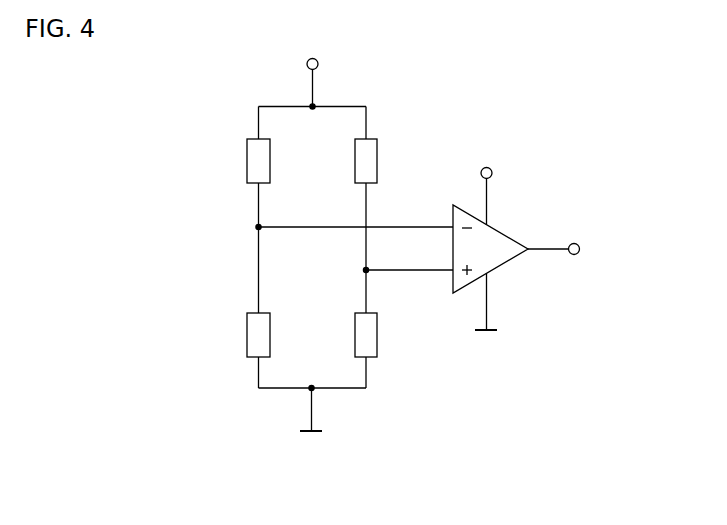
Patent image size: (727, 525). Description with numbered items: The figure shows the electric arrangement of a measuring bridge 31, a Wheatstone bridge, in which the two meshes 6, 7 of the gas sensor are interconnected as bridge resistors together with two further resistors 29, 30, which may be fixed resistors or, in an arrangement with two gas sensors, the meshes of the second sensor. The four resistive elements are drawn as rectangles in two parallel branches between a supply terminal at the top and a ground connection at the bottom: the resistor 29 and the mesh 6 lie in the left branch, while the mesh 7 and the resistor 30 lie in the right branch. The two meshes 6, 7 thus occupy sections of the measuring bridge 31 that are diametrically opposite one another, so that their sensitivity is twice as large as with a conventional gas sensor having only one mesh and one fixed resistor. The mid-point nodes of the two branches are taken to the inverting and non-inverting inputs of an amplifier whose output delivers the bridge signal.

The fixed resistor 29 is at (246, 161).
The second mesh 7 is at (378, 160).
The first mesh 6 is at (246, 338).
The fixed resistor 30 is at (377, 337).
The measuring bridge 31 is at (524, 136).